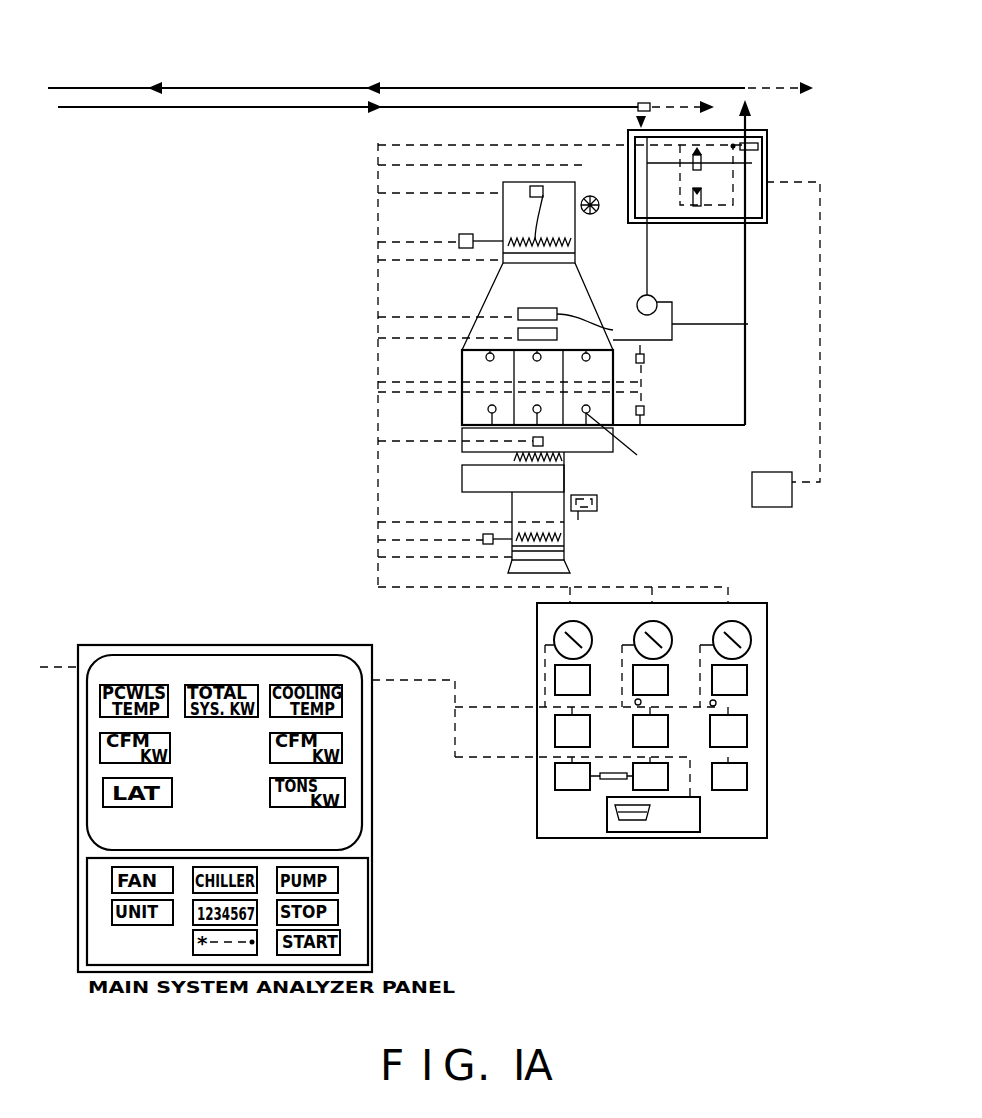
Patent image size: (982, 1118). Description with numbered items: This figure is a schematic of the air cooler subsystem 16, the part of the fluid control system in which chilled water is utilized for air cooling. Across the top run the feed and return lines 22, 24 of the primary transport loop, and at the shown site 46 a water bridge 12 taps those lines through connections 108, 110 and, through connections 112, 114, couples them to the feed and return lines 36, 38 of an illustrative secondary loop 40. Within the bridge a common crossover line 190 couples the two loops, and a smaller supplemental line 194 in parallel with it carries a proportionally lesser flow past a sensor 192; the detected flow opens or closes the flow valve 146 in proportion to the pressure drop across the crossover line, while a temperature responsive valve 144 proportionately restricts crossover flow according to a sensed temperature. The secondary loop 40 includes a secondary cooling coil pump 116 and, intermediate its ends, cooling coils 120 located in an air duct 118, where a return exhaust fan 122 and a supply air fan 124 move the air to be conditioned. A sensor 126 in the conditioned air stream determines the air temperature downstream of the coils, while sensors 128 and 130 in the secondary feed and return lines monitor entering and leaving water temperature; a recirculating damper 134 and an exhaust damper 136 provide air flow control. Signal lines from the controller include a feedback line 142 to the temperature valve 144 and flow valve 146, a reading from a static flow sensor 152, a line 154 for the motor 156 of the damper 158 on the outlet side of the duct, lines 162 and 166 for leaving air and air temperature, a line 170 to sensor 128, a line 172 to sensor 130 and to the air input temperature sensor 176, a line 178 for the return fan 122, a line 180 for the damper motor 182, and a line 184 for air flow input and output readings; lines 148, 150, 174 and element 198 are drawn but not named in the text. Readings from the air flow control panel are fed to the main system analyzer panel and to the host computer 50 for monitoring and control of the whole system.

The water bridge 12 is at (784, 120).
The subsystem 16 is at (362, 296).
The feed line 22 is at (192, 107).
The return line 24 is at (210, 88).
The feed line of secondary loop 36 is at (648, 262).
The return line of secondary loop 38 is at (676, 305).
The secondary loop 40 is at (782, 345).
The site 46 is at (645, 418).
The host computer 50 is at (765, 507).
The connection 108 is at (630, 138).
The connection 110 is at (750, 112).
The connection 112 is at (650, 240).
The connection 114 is at (790, 207).
The secondary cooling coil pump 116 is at (658, 302).
The air duct 118 is at (497, 277).
The cooling coils 120 is at (537, 411).
The return exhaust fan 122 is at (597, 504).
The supply air fan 124 is at (590, 196).
The sensor 126 is at (748, 324).
The sensor 128 is at (645, 358).
The sensor 130 is at (665, 452).
The recirculating damper 134 is at (564, 535).
The exhaust damper 136 is at (462, 478).
The feedback line 142 is at (378, 145).
The temperature valve 144 is at (694, 205).
The flow valve 146 is at (760, 146).
The control line 148 is at (376, 165).
The control line 150 is at (378, 193).
The static flow sensor 152 is at (530, 191).
The line 154 is at (378, 242).
The motor 156 is at (466, 234).
The damper 158 is at (590, 196).
The line 162 is at (378, 317).
The line 166 is at (378, 338).
The line 170 is at (378, 382).
The line 172 is at (378, 392).
The control line 174 is at (378, 442).
The sensor 176 is at (572, 495).
The line 178 is at (378, 522).
The line 180 is at (378, 545).
The damper motor 182 is at (566, 562).
The line 184 is at (378, 260).
The crossover line 190 is at (760, 168).
The sensor 192 is at (745, 100).
The supplemental line 194 is at (665, 188).
The air flow control panel 198 is at (655, 606).